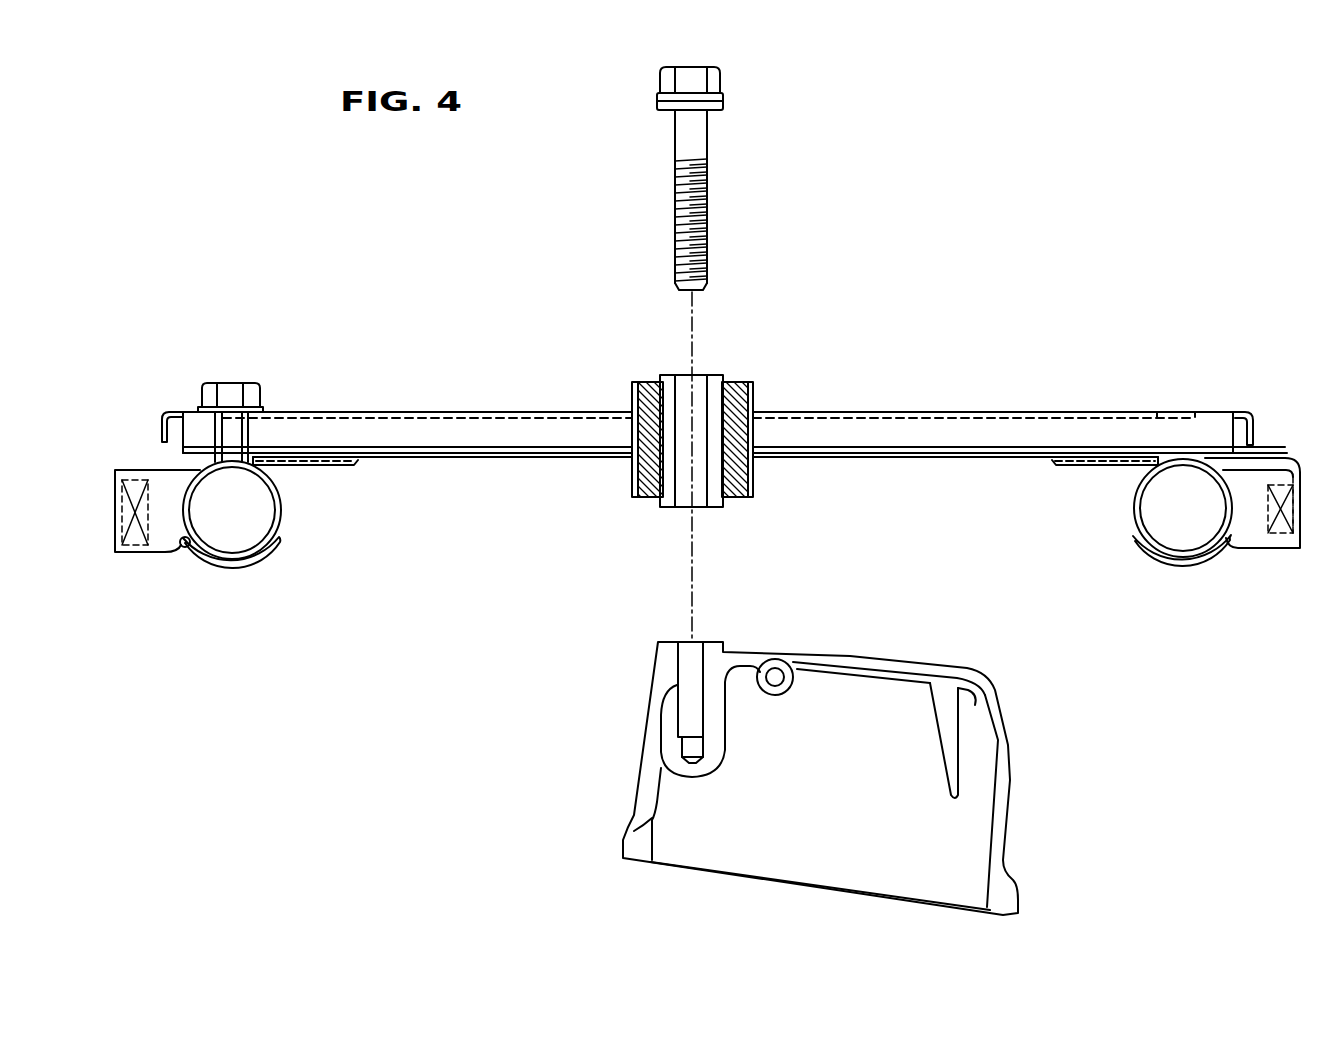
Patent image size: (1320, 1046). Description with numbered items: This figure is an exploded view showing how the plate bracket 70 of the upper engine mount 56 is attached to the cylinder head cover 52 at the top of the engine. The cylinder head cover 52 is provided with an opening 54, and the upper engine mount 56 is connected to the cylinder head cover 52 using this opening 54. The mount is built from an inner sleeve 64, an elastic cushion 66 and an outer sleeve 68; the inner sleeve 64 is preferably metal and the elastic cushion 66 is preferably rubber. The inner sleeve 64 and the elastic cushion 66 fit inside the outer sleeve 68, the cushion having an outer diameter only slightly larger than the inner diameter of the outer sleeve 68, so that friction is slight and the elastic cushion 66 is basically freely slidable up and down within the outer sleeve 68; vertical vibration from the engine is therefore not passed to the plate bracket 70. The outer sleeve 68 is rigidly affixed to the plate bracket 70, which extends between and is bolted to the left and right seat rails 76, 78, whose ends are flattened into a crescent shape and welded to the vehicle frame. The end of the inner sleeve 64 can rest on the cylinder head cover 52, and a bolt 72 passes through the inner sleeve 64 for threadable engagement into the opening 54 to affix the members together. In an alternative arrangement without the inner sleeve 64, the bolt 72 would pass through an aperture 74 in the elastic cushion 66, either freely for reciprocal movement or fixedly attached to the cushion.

The cylinder head cover 52 is at (857, 761).
The opening 54 is at (722, 655).
The upper engine mount 56 is at (720, 436).
The inner sleeve 64 is at (664, 378).
The elastic cushion 66 is at (641, 492).
The outer sleeve 68 is at (754, 490).
The plate bracket 70 is at (1005, 432).
The bolt 72 is at (716, 80).
The aperture 74 is at (723, 380).
The left seat rail 76 is at (282, 515).
The right seat rail 78 is at (1133, 516).